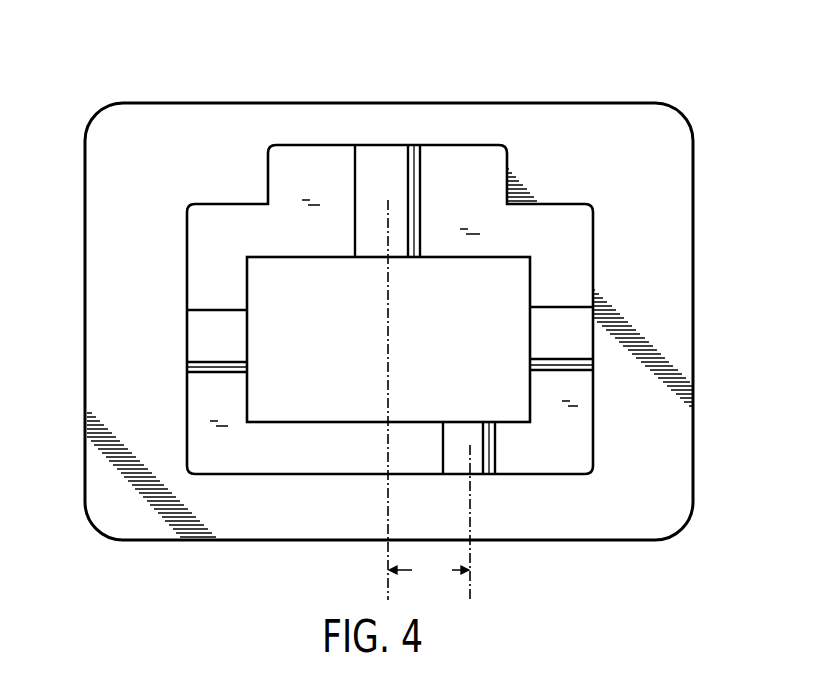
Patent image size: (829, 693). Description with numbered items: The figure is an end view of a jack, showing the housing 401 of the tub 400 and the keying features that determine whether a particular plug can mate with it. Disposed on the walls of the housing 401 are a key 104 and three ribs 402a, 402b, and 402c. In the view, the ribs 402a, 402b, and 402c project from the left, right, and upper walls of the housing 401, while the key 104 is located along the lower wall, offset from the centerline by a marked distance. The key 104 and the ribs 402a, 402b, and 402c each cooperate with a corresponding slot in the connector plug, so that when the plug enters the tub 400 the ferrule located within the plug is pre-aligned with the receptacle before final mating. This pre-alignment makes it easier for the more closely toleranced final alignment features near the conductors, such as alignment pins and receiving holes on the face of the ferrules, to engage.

The tub 400 is at (144, 80).
The housing 401 is at (619, 114).
The rib 402a is at (212, 345).
The rib 402b is at (543, 336).
The rib 402c is at (382, 155).
The key 104 is at (455, 432).